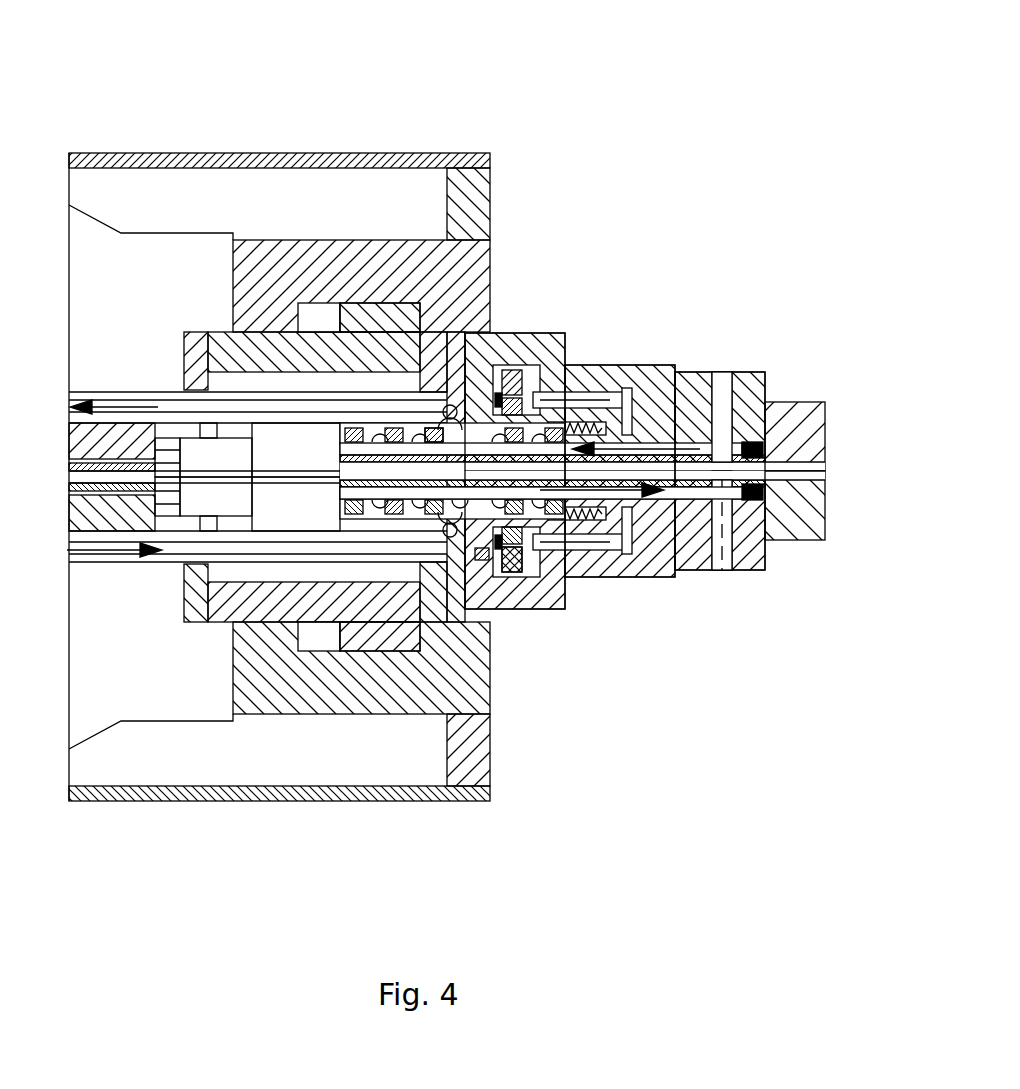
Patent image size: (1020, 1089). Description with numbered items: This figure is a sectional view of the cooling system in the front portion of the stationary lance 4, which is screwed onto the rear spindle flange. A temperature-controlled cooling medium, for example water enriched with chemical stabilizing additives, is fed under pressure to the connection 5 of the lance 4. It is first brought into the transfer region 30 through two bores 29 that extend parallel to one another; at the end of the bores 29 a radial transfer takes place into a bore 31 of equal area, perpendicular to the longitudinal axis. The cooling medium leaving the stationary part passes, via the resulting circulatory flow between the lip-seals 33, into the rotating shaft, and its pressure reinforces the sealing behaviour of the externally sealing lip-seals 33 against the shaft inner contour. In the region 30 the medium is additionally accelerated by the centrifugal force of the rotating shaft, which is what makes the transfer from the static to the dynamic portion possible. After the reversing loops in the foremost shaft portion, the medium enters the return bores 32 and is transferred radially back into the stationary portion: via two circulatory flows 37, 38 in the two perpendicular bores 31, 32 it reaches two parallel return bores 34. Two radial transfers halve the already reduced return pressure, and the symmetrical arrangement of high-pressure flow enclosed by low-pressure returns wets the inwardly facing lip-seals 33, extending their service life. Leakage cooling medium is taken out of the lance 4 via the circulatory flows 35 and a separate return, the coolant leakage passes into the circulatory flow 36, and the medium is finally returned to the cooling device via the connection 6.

The lance 4 is at (640, 403).
The connection 5 is at (724, 366).
The connection 6 is at (719, 585).
The bores 29 is at (685, 447).
The transfer region 30 is at (450, 405).
The bore 31 is at (445, 445).
The return bores 32 is at (482, 555).
The lip-seals 33 is at (426, 427).
The return bores 34 is at (675, 493).
The circulatory flows 35 is at (377, 432).
The circulatory flow 36 is at (532, 398).
The circulatory flow 37 is at (494, 548).
The circulatory flow 38 is at (404, 430).